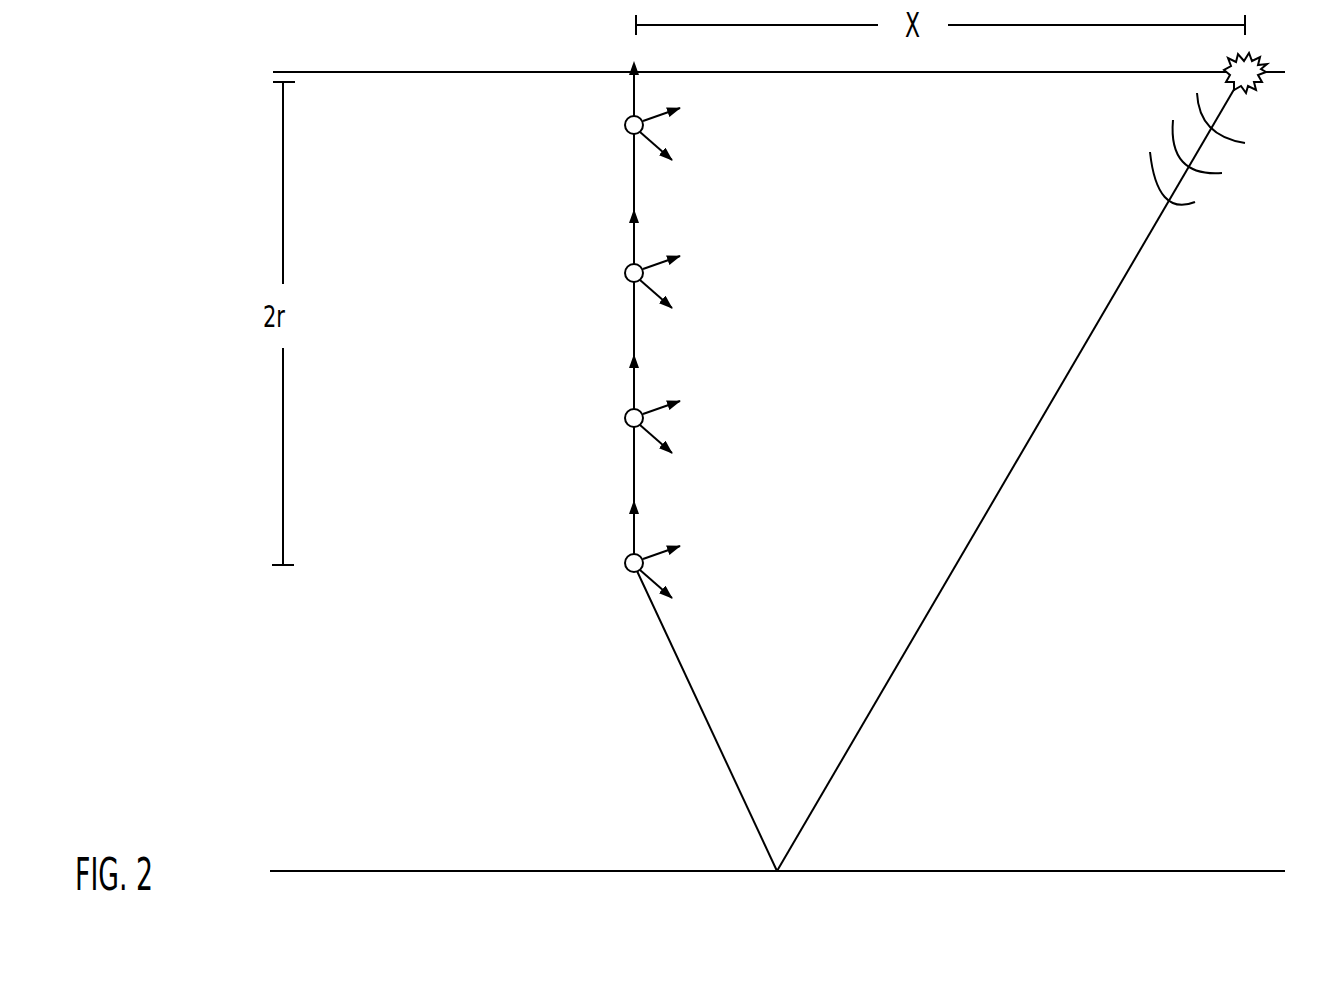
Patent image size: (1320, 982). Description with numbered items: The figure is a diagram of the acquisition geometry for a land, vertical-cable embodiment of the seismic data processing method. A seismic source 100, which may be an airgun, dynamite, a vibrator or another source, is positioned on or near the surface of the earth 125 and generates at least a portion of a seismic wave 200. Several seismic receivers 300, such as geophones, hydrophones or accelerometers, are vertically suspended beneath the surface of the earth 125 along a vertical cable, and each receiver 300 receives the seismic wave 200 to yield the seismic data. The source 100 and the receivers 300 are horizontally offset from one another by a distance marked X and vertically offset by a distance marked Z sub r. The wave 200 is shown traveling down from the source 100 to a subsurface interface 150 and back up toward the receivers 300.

The seismic source 100 is at (1255, 86).
The surface of the earth 125 is at (393, 72).
The subsurface reflector 150 is at (779, 869).
The seismic wave 200 is at (1185, 203).
The seismic receiver 300 is at (623, 128).